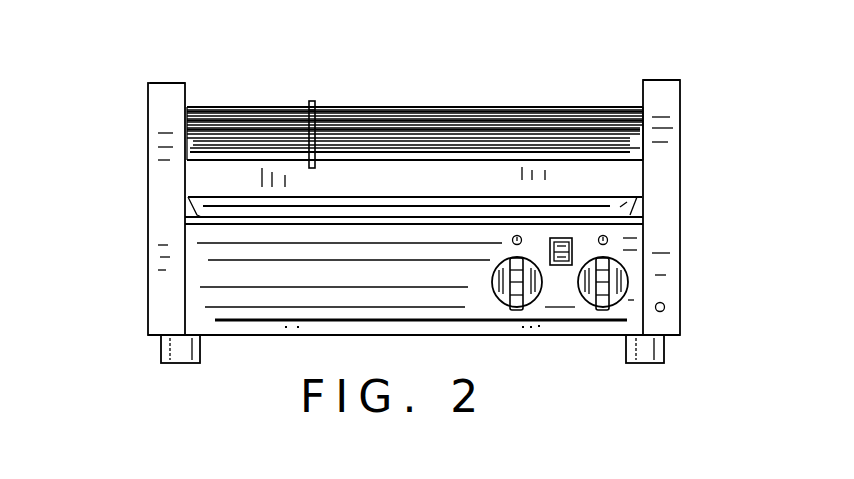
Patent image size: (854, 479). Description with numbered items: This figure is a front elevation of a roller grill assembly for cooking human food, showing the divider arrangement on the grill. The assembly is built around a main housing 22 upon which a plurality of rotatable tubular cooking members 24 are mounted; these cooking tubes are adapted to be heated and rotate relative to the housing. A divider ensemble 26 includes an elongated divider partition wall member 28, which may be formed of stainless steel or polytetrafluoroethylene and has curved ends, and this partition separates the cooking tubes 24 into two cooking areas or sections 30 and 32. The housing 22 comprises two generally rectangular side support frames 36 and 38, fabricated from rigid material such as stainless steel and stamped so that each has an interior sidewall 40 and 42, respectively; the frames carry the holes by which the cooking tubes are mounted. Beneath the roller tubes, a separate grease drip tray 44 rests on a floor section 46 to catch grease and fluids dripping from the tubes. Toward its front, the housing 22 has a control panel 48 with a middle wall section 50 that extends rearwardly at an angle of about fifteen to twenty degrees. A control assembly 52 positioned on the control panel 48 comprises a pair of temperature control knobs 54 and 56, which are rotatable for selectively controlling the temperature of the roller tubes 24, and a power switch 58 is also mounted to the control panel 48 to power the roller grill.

The main housing 22 is at (119, 267).
The rotatable tubular cooking members 24 is at (410, 150).
The divider ensemble 26 is at (310, 76).
The divider partition wall member 28 is at (313, 102).
The cooking section 30 is at (236, 84).
The cooking section 32 is at (477, 82).
The side support frame 36 is at (118, 187).
The side support frame 38 is at (708, 128).
The interior sidewall 40 is at (193, 88).
The interior sidewall 42 is at (637, 90).
The grease drip tray 44 is at (640, 195).
The floor section 46 is at (643, 215).
The control panel 48 is at (243, 280).
The middle wall section 50 is at (290, 292).
The control assembly 52 is at (644, 263).
The temperature control knob 54 is at (517, 310).
The temperature control knob 56 is at (603, 310).
The power switch 58 is at (561, 265).